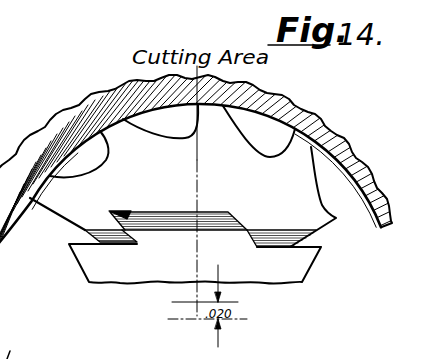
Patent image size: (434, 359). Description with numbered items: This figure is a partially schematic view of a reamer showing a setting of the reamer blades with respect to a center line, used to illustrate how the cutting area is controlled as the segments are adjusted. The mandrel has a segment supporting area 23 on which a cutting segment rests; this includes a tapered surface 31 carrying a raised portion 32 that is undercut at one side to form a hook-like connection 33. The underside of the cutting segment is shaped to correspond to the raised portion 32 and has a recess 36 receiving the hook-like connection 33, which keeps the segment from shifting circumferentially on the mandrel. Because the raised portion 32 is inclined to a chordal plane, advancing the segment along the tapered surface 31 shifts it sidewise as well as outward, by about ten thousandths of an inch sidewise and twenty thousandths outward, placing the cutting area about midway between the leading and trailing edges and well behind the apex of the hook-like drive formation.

The segment supporting area 23 is at (70, 283).
The tapered surface 31 is at (282, 247).
The raised portion 32 is at (212, 231).
The hook-like connection 33 is at (140, 237).
The recess 36 is at (132, 213).